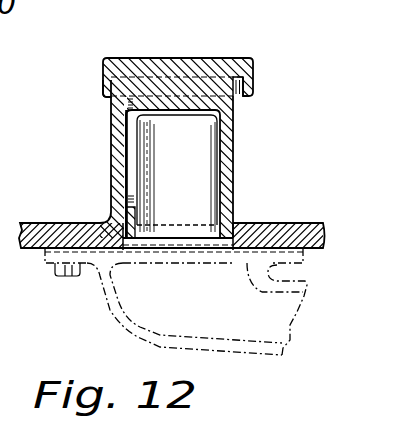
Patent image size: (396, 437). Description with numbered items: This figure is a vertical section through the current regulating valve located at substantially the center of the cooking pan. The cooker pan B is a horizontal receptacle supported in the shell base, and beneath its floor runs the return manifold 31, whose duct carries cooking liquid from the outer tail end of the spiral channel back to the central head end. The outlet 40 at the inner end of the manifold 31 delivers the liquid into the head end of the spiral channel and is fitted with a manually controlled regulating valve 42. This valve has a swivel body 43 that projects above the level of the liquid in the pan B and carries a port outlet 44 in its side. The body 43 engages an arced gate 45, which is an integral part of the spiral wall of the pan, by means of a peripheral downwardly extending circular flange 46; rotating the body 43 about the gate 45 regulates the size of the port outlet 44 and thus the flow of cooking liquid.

The swivel body 43 is at (170, 62).
The peripheral downwardly extending circular flange 46 is at (108, 80).
The port outlet 44 is at (130, 133).
The arced gate 45 is at (111, 172).
The regulating valve 42 is at (233, 148).
The outlet 40 is at (203, 240).
The cooker pan B is at (315, 200).
The return manifold 31 is at (113, 320).